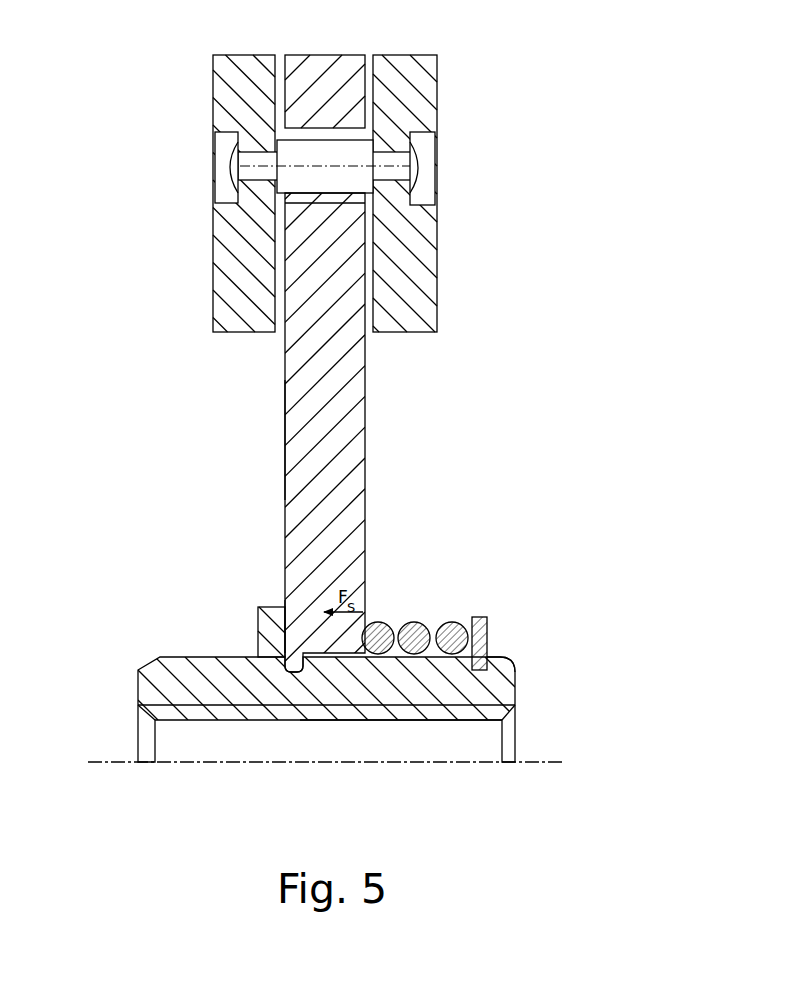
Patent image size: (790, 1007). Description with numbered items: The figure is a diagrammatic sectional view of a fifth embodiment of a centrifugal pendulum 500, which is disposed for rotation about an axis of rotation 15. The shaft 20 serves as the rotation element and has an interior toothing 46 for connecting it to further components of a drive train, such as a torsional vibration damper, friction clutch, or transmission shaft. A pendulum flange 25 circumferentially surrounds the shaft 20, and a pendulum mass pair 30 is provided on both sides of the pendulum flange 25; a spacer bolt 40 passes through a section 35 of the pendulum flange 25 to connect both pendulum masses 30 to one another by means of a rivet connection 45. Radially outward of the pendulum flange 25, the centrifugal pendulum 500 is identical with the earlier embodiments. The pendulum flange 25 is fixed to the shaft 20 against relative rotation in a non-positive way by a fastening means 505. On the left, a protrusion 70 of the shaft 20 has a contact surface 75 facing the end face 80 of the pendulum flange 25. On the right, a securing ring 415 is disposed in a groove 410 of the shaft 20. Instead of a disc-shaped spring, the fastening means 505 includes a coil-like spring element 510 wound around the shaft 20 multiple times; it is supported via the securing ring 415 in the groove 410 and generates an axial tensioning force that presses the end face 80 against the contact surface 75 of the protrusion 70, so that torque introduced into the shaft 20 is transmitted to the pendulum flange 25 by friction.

The axis of rotation 15 is at (553, 762).
The shaft 20 is at (497, 680).
The pendulum flange 25 is at (357, 425).
The pendulum mass pair 30 is at (228, 270).
The section 35 is at (366, 155).
The spacer bolt 40 is at (313, 130).
The rivet connection 45 is at (232, 176).
The interior toothing 46 is at (408, 712).
The protrusion 70 is at (268, 626).
The contact surface 75 is at (288, 632).
The end face 80 is at (282, 436).
The groove 410 is at (488, 663).
The securing ring 415 is at (477, 618).
The centrifugal pendulum 500 is at (562, 520).
The fastening means 505 is at (402, 562).
The coil-like spring element 510 is at (418, 624).